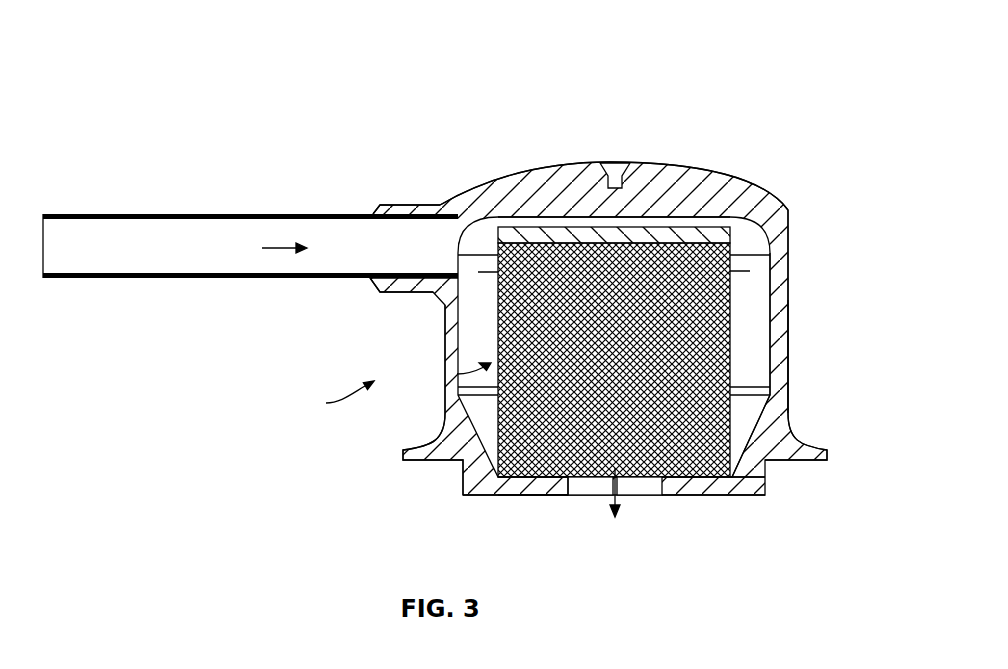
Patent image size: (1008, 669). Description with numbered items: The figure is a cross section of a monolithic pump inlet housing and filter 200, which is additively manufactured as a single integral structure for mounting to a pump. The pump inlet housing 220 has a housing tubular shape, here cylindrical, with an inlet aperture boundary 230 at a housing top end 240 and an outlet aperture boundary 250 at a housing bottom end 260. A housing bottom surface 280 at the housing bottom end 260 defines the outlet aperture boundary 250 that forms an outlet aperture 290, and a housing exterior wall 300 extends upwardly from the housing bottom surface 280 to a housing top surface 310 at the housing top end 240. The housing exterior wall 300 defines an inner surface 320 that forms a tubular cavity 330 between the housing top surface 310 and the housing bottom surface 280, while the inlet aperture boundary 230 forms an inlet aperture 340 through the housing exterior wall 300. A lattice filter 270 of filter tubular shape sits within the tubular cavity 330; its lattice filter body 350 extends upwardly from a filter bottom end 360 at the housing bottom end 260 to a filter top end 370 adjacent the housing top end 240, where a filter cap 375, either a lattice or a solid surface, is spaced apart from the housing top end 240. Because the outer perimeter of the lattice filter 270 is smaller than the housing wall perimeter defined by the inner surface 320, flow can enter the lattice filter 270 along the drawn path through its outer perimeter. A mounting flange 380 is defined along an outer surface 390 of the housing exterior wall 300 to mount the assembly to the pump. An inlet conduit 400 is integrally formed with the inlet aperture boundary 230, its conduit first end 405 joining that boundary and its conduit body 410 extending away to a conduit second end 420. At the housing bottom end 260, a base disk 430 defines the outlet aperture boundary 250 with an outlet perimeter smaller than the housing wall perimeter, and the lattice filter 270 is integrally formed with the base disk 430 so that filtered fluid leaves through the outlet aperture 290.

The pump inlet housing and filter 200 is at (810, 179).
The pump inlet housing 220 is at (778, 230).
The inlet aperture boundary 230 is at (398, 205).
The housing top end 240 is at (562, 180).
The outlet aperture boundary 250 is at (633, 496).
The housing bottom end 260 is at (457, 481).
The lattice filter 270 is at (557, 482).
The housing bottom surface 280 is at (525, 491).
The outlet aperture 290 is at (607, 487).
The housing exterior wall 300 is at (784, 347).
The housing top surface 310 is at (698, 170).
The inner surface 320 is at (475, 333).
The tubular cavity 330 is at (451, 387).
The inlet aperture 340 is at (448, 255).
The lattice filter body 350 is at (732, 366).
The filter bottom end 360 is at (752, 470).
The filter top end 370 is at (731, 271).
The filter cap 375 is at (608, 226).
The mounting flange 380 is at (823, 450).
The outer surface 390 is at (783, 387).
The inlet conduit 400 is at (153, 238).
The conduit first end 405 is at (373, 286).
The conduit body 410 is at (230, 282).
The conduit second end 420 is at (88, 282).
The base disk 430 is at (692, 487).